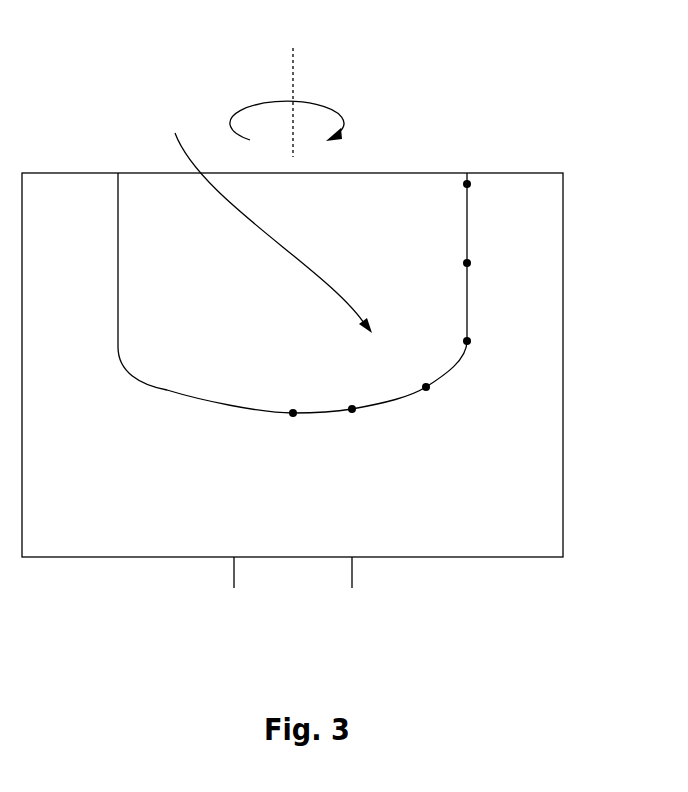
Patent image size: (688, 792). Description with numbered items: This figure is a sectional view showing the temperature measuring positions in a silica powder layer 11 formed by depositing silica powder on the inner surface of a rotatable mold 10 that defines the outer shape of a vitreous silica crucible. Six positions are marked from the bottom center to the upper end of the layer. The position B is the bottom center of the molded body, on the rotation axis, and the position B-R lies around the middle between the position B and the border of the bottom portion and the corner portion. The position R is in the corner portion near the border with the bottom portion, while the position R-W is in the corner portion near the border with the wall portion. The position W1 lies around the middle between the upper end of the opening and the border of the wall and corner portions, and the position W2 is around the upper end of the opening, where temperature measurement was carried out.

The mold 10 is at (125, 557).
The silica powder layer 11 is at (266, 218).
The position W2 is at (467, 184).
The position W1 is at (467, 263).
The position R-W is at (467, 341).
The position R is at (426, 387).
The position B is at (293, 413).
The position B-R is at (352, 409).